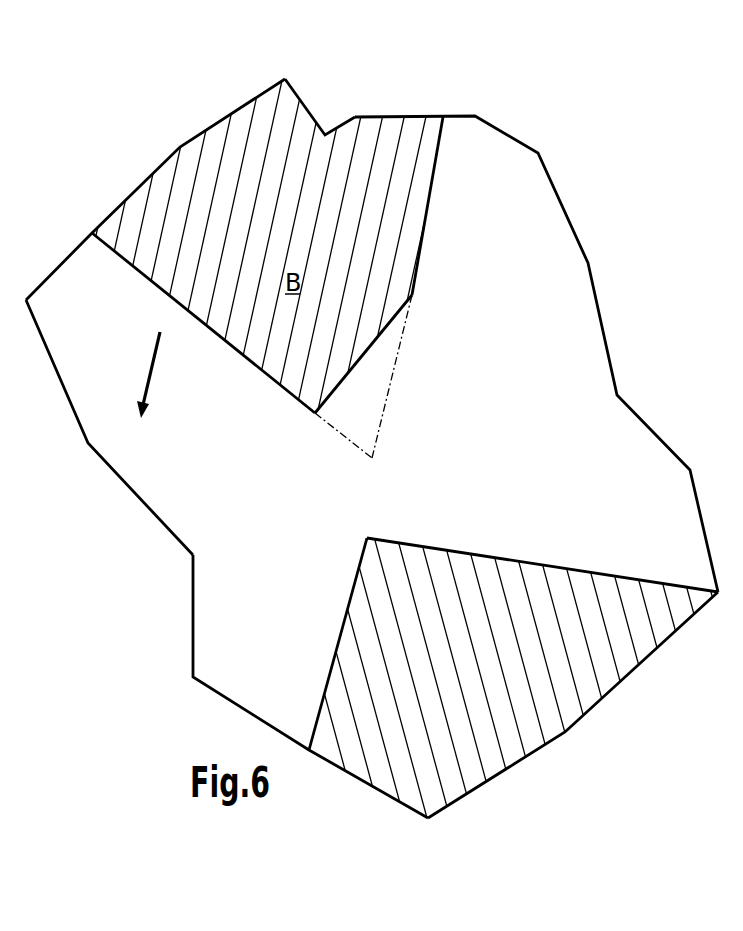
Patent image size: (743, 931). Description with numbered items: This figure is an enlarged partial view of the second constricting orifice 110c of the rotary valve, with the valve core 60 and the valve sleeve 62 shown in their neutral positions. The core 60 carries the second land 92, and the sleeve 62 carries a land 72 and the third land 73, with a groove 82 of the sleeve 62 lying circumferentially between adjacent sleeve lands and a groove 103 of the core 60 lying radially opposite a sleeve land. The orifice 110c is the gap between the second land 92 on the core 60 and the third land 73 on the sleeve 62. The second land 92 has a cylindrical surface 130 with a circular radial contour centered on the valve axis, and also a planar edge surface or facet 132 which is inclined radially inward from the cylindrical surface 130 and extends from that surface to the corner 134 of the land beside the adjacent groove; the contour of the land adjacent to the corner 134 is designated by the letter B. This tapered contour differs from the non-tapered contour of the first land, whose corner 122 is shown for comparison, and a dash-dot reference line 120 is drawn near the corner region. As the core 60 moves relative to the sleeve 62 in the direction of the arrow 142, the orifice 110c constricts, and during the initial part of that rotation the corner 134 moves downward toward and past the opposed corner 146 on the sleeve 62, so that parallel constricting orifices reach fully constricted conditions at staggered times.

The valve core 60 is at (386, 114).
The valve sleeve 62 is at (0, 441).
The land 72 is at (214, 659).
The third land 73 is at (570, 678).
The groove 82 is at (545, 455).
The second land 92 is at (360, 150).
The groove 103 is at (224, 450).
The second constricting orifice 110c is at (380, 510).
The reference axis 120 is at (390, 392).
The corner 122 is at (372, 458).
The cylindrical surface 130 is at (427, 228).
The facet 132 is at (365, 351).
The corner 134 is at (315, 414).
The arrow 142 is at (152, 362).
The corner 146 is at (367, 538).